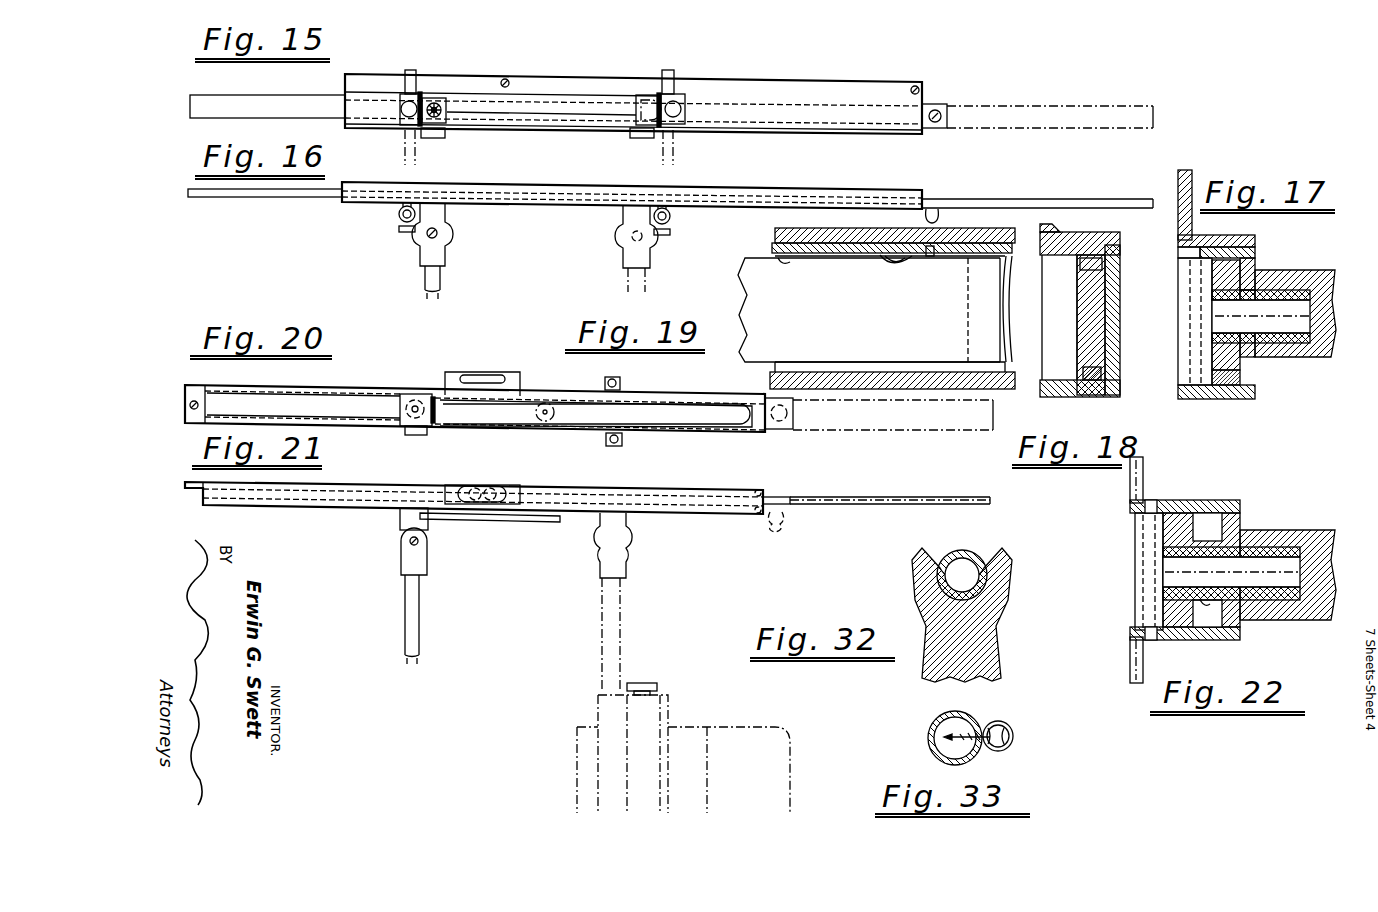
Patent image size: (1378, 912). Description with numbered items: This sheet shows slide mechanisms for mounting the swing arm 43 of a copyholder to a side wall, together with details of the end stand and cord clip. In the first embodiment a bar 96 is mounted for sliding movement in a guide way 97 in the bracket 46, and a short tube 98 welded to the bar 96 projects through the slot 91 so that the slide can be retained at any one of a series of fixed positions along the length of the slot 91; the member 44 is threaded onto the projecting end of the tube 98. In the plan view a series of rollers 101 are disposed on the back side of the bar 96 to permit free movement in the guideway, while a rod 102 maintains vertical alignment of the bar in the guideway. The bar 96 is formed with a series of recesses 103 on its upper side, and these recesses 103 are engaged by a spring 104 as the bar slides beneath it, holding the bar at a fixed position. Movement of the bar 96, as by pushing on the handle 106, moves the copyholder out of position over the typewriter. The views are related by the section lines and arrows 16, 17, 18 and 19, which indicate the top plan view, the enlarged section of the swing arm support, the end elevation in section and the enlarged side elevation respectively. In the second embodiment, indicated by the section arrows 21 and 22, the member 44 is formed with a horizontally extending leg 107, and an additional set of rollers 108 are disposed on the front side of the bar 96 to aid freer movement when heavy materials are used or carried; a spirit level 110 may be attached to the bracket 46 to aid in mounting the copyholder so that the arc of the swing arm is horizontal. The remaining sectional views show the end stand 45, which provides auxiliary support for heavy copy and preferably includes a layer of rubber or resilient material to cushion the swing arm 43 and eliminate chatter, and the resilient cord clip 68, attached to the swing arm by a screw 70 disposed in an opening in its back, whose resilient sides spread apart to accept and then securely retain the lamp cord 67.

In FIG. 15, the section line 16- 16 is at (260, 68).
In FIG. 15, the section line 17- 17 is at (435, 165).
In FIG. 15, the section line 18- 18 is at (820, 165).
In FIG. 18, the section line 19- 19 is at (1105, 218).
In FIG. 20, the section line 21- 21 is at (265, 378).
In FIG. 21, the section line 22- 22 is at (415, 530).
In FIG. 32, the swing arm 43 is at (956, 552).
In FIG. 33, the swing arm 43 is at (958, 714).
In FIG. 17, the member 44 is at (1300, 272).
In FIG. 21, the member 44 is at (400, 520).
In FIG. 22, the member 44 is at (1284, 530).
In FIG. 32, the end stand 45 is at (1008, 583).
In FIG. 15, the bracket 46 is at (556, 75).
In FIG. 17, the bracket 46 is at (1207, 240).
In FIG. 33, the cord 67 is at (1015, 749).
In FIG. 33, the resilient cord clip 68 is at (1008, 723).
In FIG. 33, the screw 70 is at (998, 750).
In FIG. 15, the slot 91 is at (552, 122).
In FIG. 15, the bar 96 is at (292, 108).
In FIG. 16, the bar 96 is at (290, 196).
In FIG. 19, the bar 96 is at (750, 291).
In FIG. 17, the bar 96 is at (1247, 270).
In FIG. 17, the guide way 97 is at (1247, 241).
In FIG. 17, the short tube 98 is at (1275, 345).
In FIG. 16, the rollers 101 is at (635, 191).
In FIG. 17, the rollers 101 is at (1183, 361).
In FIG. 21, the rollers 101 is at (758, 490).
In FIG. 22, the rollers 101 is at (1146, 578).
In FIG. 19, the rod 102 is at (903, 368).
In FIG. 17, the rod 102 is at (1230, 398).
In FIG. 19, the recesses 103 is at (786, 259).
In FIG. 19, the spring 104 is at (898, 259).
In FIG. 15, the handle 106 is at (940, 130).
In FIG. 21, the horizontally extending leg 107 is at (522, 522).
In FIG. 21, the rollers 108 is at (752, 515).
In FIG. 22, the rollers 108 is at (1212, 622).
In FIG. 20, the spirit level 110 is at (512, 372).